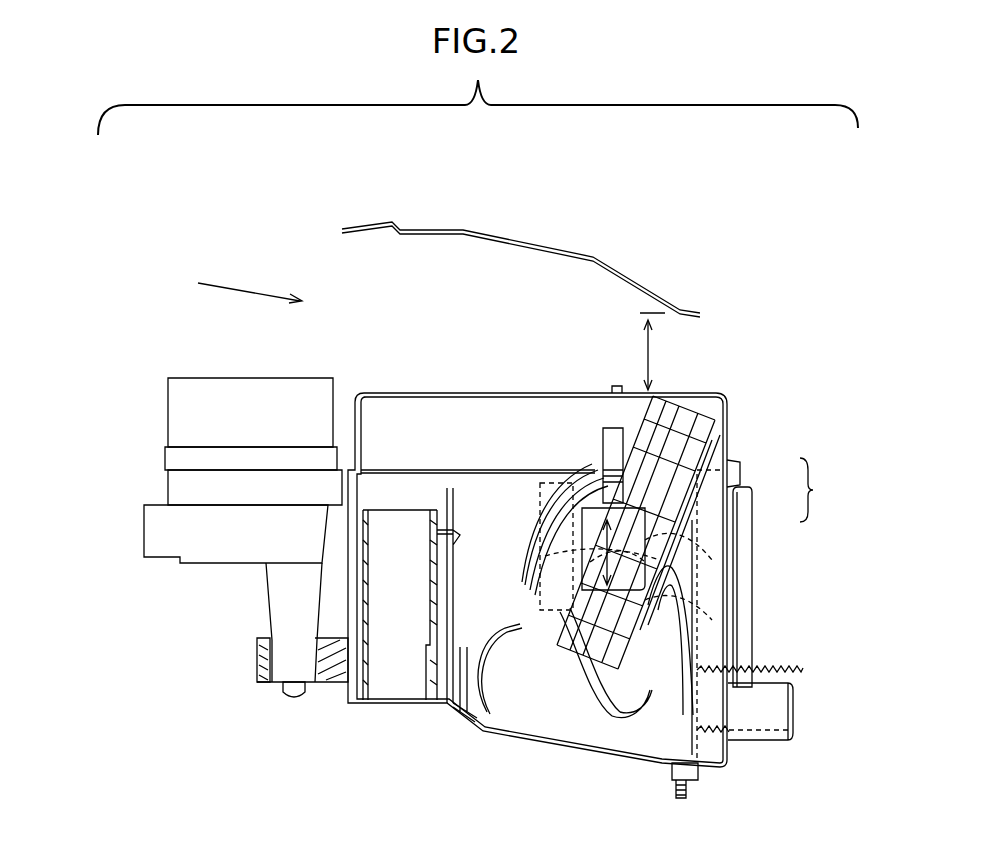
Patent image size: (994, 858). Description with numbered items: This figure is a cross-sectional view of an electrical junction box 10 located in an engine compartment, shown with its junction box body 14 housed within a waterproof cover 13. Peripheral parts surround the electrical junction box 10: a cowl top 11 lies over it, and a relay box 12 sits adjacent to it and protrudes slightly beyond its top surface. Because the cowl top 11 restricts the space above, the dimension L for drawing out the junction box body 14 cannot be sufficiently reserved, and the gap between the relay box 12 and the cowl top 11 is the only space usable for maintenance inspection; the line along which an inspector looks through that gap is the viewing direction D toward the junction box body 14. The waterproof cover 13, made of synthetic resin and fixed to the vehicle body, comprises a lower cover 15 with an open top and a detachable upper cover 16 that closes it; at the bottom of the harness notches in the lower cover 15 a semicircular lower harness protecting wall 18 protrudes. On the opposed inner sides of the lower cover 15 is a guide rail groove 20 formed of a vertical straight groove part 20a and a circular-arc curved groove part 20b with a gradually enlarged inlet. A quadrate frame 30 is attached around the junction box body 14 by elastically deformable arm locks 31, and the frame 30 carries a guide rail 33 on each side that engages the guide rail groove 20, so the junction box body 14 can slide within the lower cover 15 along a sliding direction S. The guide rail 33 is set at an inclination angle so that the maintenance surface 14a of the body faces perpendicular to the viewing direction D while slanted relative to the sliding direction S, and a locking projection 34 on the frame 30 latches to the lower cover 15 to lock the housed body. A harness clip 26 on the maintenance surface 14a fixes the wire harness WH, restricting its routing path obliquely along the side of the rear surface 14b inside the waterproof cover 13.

The electrical junction box 10 is at (797, 430).
The cowl top 11 is at (557, 247).
The relay box 12 is at (185, 410).
The waterproof cover 13 is at (827, 490).
The junction box body 14 is at (733, 407).
The maintenance surface 14a is at (620, 390).
The rear surface 14b is at (522, 742).
The lower cover 15 is at (752, 532).
The upper cover 16 is at (738, 448).
The lower harness protecting wall 18 is at (760, 734).
The guide rail groove 20 is at (692, 575).
The straight groove part 20a is at (705, 600).
The curved groove part 20b is at (700, 540).
The harness clip 26 is at (487, 713).
The frame 30 is at (661, 416).
The arm lock 31 is at (705, 397).
The guide rail 33 is at (552, 440).
The locking projection 34 is at (605, 440).
The viewing direction D is at (200, 283).
The dimension for drawing out L is at (643, 342).
The sliding direction S is at (545, 556).
The wire harness WH is at (605, 716).